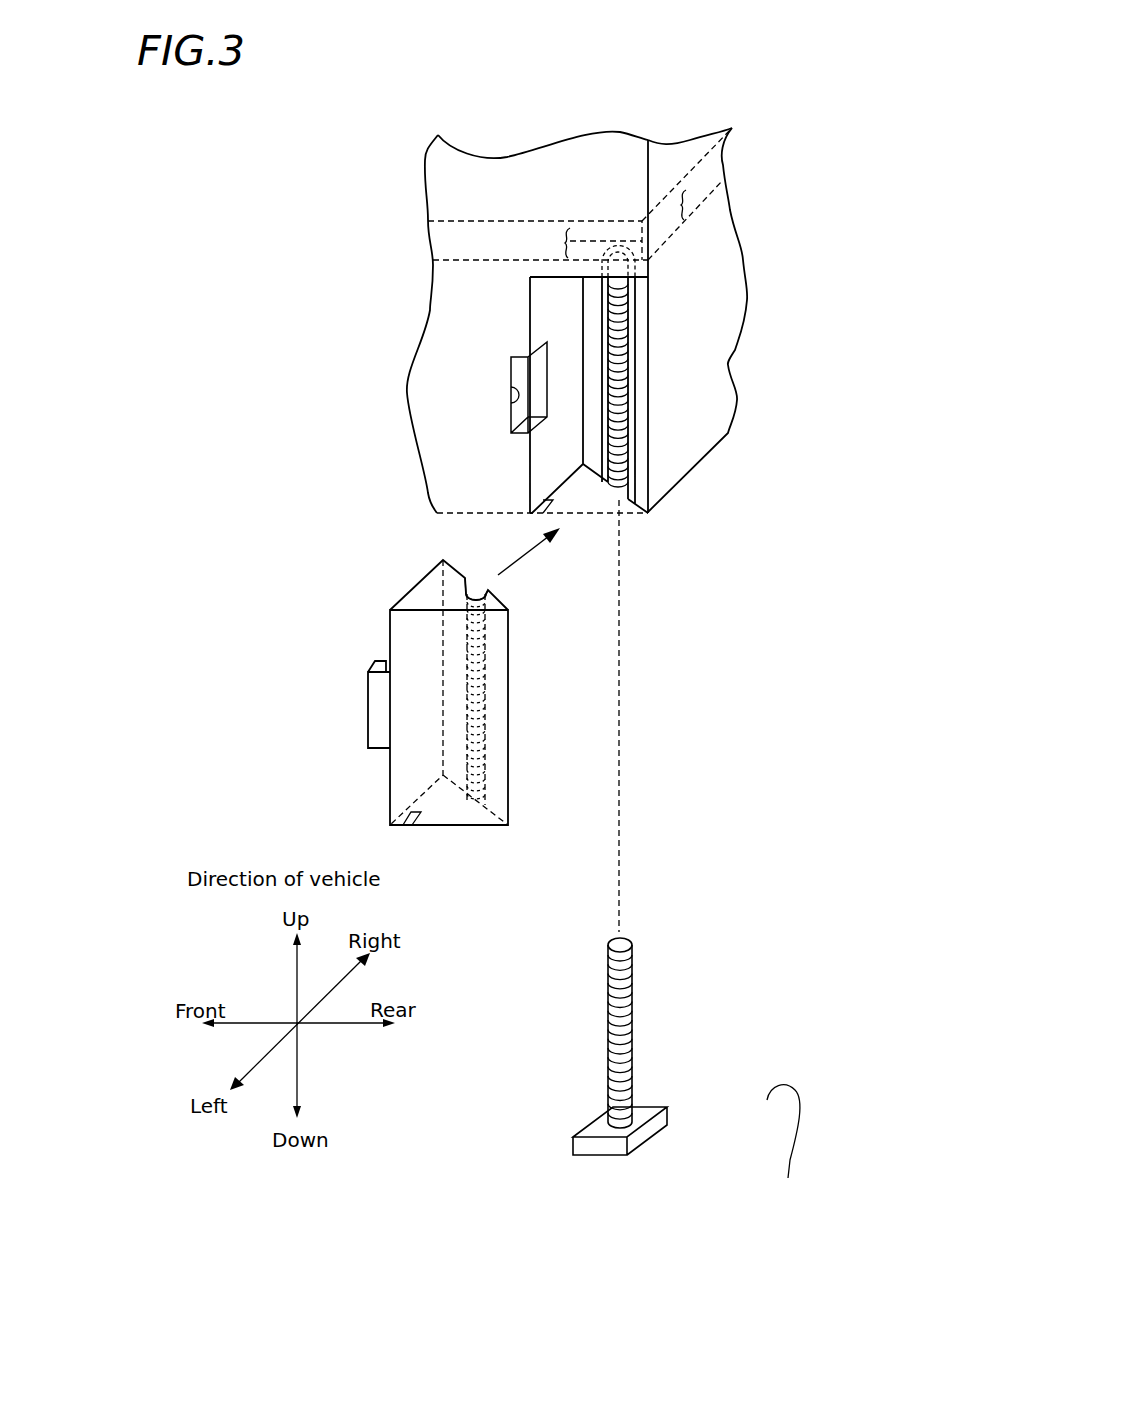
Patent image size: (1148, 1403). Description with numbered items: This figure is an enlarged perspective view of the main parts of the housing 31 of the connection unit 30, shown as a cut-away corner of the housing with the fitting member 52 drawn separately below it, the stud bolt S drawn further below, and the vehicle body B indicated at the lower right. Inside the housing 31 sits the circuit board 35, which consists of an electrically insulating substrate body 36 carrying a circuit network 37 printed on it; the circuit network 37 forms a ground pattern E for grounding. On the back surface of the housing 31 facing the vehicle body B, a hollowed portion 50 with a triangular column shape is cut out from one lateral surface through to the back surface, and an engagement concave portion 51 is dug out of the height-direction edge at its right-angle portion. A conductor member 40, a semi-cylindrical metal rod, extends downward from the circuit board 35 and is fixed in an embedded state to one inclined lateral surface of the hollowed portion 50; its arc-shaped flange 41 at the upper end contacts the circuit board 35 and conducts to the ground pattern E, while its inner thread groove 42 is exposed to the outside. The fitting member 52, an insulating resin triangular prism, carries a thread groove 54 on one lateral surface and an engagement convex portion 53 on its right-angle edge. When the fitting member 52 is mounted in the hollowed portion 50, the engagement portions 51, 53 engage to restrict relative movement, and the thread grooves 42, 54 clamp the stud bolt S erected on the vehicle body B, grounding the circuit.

The connection unit 30 is at (634, 320).
The housing 31 is at (722, 230).
The circuit board 35 is at (538, 166).
The substrate body 36 is at (538, 166).
The circuit network 37 is at (525, 202).
The conductor member 40 is at (625, 459).
The flange 41 is at (650, 263).
The thread groove 42 is at (622, 427).
The hollowed portion 50 is at (554, 318).
The engagement concave portion 51 is at (510, 405).
The fitting member 52 is at (400, 630).
The engagement convex portion 53 is at (378, 710).
The thread groove 54 is at (478, 597).
The ground pattern E is at (668, 213).
The stud bolt S is at (645, 1017).
The vehicle body B is at (783, 1147).